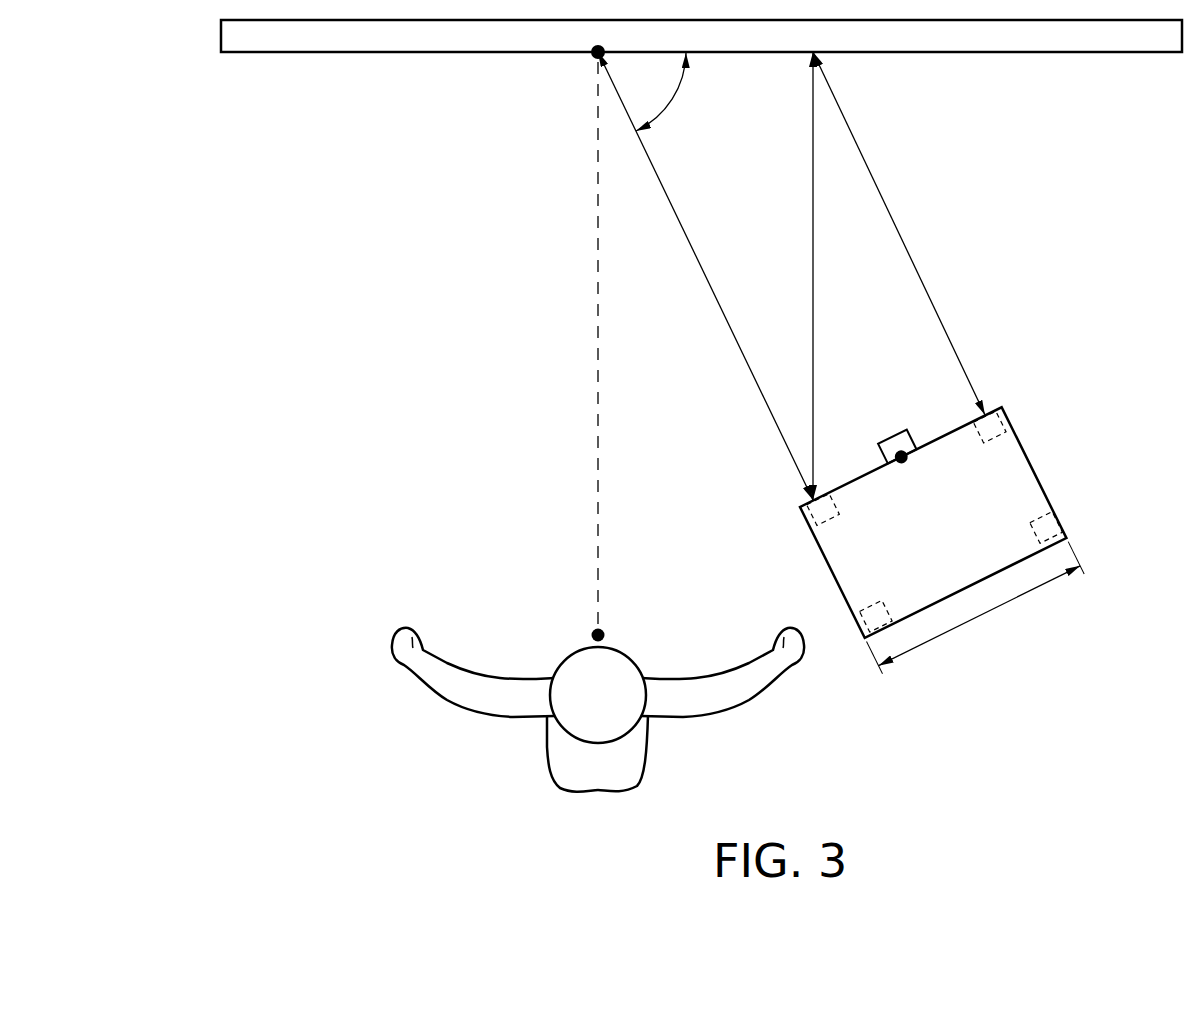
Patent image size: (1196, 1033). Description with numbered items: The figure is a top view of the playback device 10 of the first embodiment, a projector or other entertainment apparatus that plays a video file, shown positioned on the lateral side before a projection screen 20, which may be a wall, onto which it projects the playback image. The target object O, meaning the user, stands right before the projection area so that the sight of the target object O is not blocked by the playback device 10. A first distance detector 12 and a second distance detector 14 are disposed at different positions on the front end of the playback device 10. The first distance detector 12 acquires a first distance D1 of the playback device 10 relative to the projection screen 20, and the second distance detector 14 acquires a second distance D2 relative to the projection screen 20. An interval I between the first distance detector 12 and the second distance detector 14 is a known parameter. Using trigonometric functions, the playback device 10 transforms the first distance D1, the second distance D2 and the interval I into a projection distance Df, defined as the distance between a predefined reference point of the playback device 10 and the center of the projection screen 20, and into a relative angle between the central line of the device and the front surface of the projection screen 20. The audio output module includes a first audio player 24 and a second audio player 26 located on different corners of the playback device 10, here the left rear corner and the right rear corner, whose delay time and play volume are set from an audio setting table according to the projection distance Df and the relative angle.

The playback device 10 is at (1017, 480).
The first distance detector 12 is at (802, 513).
The second distance detector 14 is at (996, 424).
The projection screen 20 is at (333, 40).
The first audio player 24 is at (862, 630).
The second audio player 26 is at (1060, 528).
The target object O is at (570, 677).
The first distance D1 is at (720, 305).
The second distance D2 is at (906, 235).
The projection distance Df is at (816, 288).
The interval I is at (976, 608).